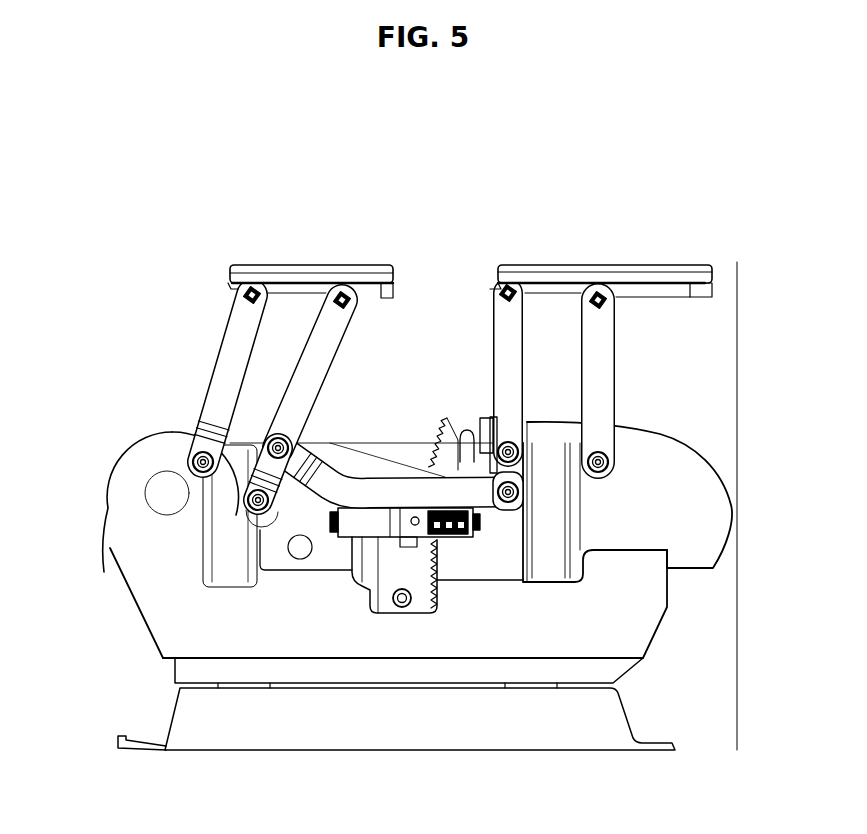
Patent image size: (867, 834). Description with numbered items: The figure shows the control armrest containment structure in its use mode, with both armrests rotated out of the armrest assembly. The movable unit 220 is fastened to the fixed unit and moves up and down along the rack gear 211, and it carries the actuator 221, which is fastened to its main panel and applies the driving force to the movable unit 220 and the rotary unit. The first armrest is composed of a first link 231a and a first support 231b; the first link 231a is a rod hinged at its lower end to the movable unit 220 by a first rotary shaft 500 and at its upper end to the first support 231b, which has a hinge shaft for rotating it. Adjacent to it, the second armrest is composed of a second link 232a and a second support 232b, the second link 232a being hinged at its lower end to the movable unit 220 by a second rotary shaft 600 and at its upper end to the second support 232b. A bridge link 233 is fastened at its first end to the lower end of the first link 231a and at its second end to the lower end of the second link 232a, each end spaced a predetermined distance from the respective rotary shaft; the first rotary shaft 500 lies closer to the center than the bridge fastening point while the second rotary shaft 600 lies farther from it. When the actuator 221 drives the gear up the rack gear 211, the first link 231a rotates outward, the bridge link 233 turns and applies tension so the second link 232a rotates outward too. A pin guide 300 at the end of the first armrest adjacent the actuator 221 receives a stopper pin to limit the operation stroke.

The movable unit 220 is at (552, 545).
The actuator 221 is at (360, 527).
The rack gear 211 is at (420, 580).
The pin guide 300 is at (470, 437).
The bridge link 233 is at (407, 490).
The second link 232a is at (330, 327).
The second support 232b is at (347, 272).
The first link 231a is at (515, 328).
The first support 231b is at (640, 290).
The first rotary shaft 500 is at (510, 447).
The second rotary shaft 600 is at (248, 499).